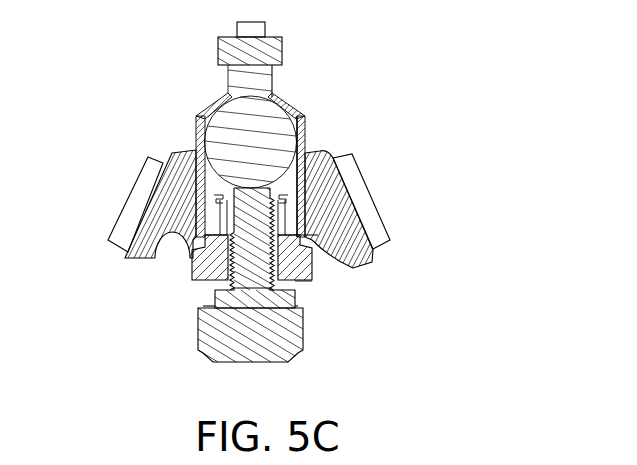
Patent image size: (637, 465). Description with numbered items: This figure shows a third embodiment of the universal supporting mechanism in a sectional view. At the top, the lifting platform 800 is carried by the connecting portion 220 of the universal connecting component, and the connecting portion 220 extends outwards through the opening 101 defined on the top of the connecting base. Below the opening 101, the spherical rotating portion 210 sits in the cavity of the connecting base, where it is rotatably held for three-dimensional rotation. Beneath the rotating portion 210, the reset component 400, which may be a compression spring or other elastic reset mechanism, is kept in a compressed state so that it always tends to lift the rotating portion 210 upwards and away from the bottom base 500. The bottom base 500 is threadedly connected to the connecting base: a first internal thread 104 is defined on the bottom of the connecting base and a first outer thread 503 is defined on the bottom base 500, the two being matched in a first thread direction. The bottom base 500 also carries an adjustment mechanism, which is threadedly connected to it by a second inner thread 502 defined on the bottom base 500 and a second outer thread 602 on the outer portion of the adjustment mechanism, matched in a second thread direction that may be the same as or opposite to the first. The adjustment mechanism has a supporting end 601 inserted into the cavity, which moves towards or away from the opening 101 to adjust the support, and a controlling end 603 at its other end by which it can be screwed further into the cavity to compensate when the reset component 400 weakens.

The lifting platform 800 is at (283, 49).
The connecting portion 220 is at (233, 80).
The rotating portion 210 is at (194, 117).
The opening 101 is at (298, 111).
The reset component 400 is at (187, 155).
The supporting end 601 is at (307, 150).
The second outer thread 602 is at (195, 262).
The first outer thread 503 is at (302, 238).
The bottom base 500 is at (305, 285).
The second inner thread 502 is at (200, 305).
The first internal thread 104 is at (303, 278).
The controlling end 603 is at (197, 323).